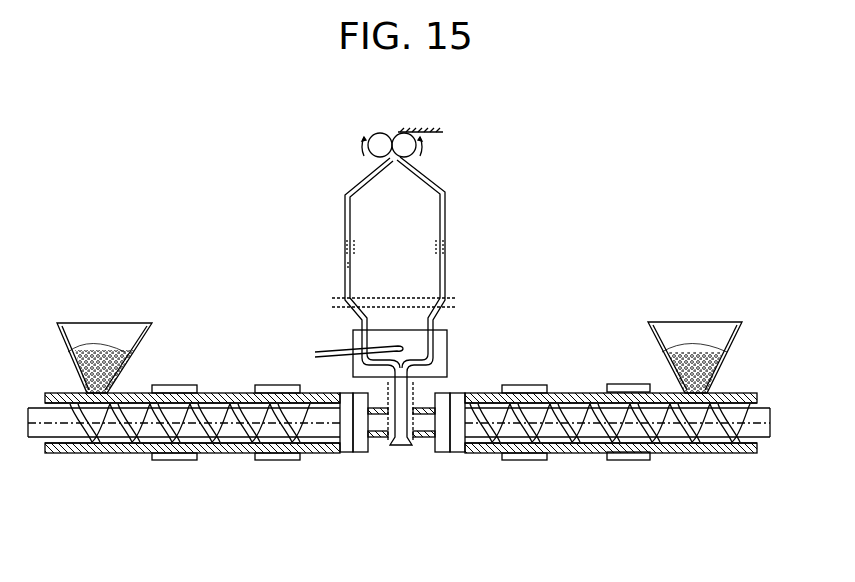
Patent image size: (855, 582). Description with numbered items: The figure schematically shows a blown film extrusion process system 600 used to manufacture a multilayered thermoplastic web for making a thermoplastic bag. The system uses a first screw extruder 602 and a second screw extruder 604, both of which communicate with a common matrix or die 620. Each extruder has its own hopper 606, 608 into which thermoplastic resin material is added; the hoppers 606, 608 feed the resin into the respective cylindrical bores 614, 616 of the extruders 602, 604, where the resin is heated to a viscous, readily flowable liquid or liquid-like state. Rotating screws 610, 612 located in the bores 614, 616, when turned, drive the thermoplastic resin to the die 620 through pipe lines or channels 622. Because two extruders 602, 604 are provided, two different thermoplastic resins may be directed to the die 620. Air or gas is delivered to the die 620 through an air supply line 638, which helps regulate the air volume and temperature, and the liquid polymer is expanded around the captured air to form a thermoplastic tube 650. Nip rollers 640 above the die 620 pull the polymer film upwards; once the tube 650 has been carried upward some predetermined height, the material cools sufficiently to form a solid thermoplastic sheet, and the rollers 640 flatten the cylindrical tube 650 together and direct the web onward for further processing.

The blown film extrusion process system 600 is at (220, 227).
The first screw extruder 602 is at (95, 462).
The second screw extruder 604 is at (592, 472).
The hopper 606 is at (63, 347).
The hopper 608 is at (730, 353).
The rotating screw 610 is at (213, 432).
The rotating screw 612 is at (747, 453).
The cylindrical bore 614 is at (180, 462).
The cylindrical bore 616 is at (467, 450).
The die 620 is at (447, 340).
The pipe lines or channels 622 is at (394, 447).
The air supply line 638 is at (333, 348).
The nip rollers 640 is at (400, 138).
The thermoplastic tube 650 is at (447, 226).